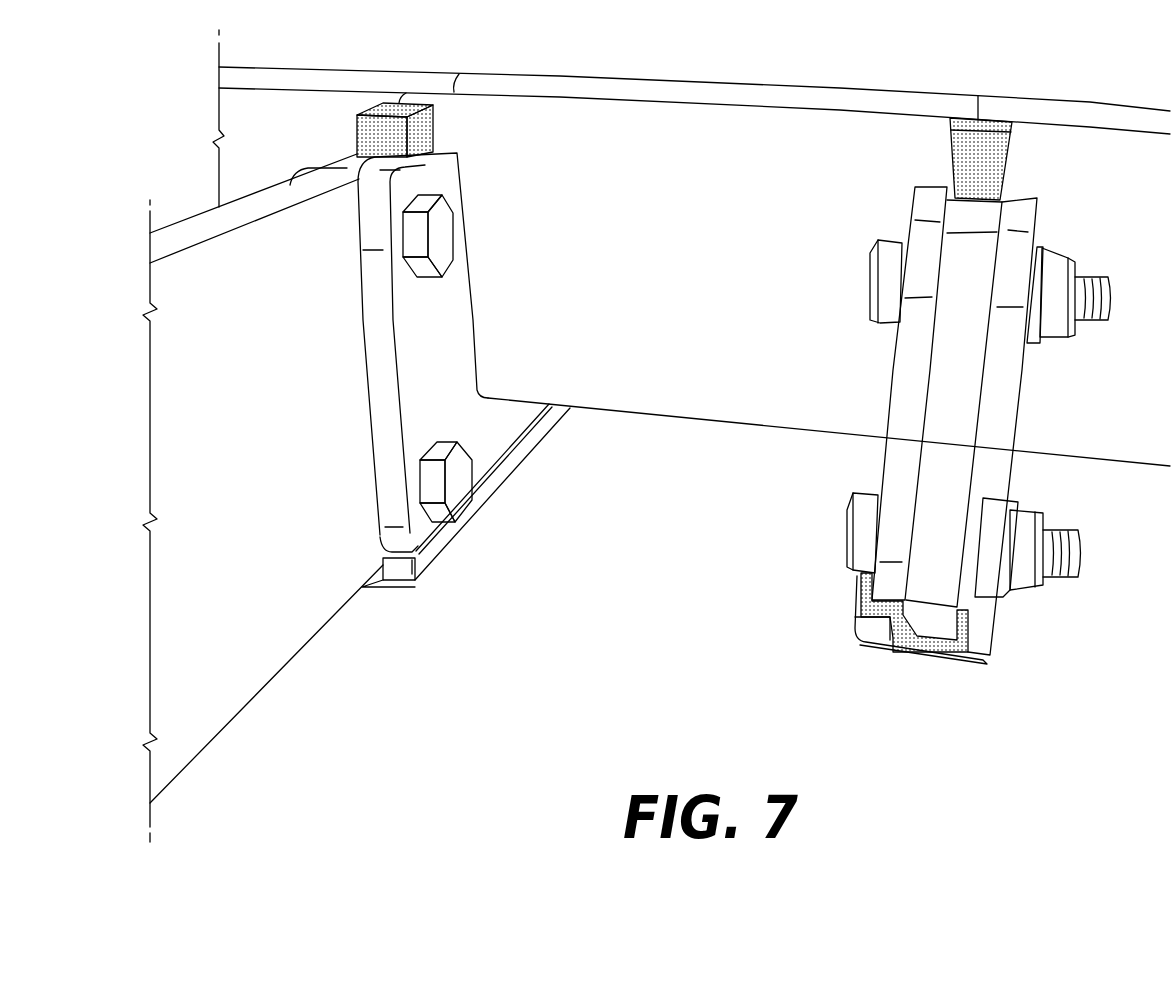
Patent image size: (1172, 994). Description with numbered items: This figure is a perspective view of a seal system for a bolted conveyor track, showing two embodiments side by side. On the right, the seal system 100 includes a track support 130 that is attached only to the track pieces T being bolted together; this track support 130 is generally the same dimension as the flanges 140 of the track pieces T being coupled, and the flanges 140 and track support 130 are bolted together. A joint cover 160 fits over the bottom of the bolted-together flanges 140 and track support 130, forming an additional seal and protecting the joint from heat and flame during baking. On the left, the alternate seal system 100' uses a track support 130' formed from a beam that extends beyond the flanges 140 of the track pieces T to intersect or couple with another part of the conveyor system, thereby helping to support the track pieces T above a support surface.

The track pieces T is at (640, 130).
The seal system 100 is at (956, 419).
The seal system 100' is at (441, 384).
The track support 130 is at (914, 646).
The track support 130' is at (360, 603).
The flanges 140 is at (486, 432).
The joint cover 160 is at (849, 652).